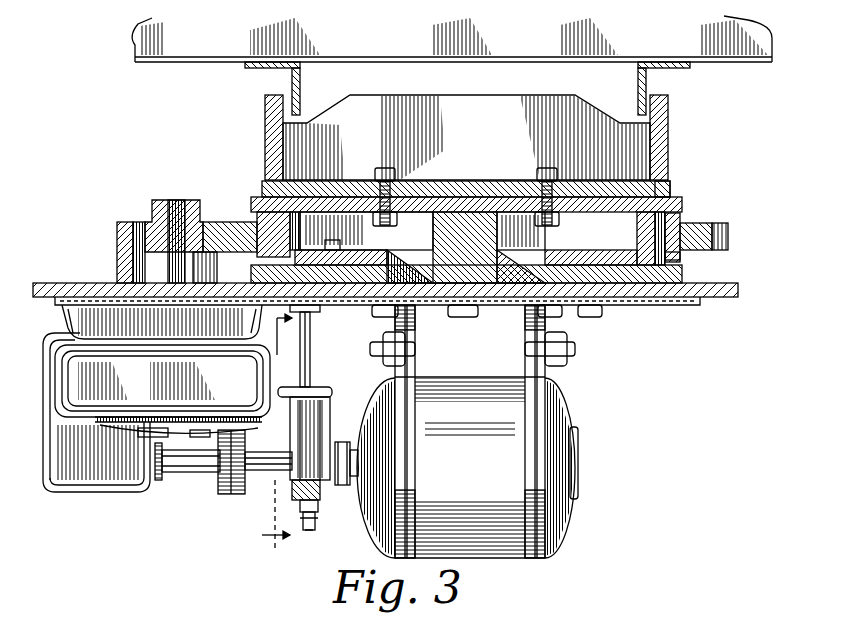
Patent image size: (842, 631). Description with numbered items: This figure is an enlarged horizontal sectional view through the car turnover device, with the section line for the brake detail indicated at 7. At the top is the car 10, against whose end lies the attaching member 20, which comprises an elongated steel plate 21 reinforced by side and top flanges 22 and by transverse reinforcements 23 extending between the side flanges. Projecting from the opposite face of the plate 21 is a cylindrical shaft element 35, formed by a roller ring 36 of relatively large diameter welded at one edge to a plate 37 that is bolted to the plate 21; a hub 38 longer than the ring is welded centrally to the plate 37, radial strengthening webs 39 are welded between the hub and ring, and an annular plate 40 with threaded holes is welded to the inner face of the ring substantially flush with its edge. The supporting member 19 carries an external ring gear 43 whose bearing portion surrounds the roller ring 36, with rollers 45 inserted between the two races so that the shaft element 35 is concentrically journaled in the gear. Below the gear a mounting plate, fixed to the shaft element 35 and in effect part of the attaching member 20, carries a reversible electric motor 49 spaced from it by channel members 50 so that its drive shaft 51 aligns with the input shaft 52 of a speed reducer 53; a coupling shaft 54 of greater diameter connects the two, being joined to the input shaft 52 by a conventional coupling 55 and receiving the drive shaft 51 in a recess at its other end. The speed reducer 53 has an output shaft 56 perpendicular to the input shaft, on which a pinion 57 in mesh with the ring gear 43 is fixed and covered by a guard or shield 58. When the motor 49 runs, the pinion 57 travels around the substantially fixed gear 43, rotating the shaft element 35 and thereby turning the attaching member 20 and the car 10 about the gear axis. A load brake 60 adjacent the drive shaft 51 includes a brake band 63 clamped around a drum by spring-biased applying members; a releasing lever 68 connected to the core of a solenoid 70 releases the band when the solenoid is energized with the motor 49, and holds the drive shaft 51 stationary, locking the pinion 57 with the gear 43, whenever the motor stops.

The car 10 is at (205, 65).
The supporting member 19 is at (728, 253).
The attaching member 20 is at (262, 185).
The elongated steel plate 21 is at (440, 186).
The side and top flanges 22 is at (265, 136).
The transverse reinforcements 23 is at (438, 108).
The shaft element 35 is at (686, 203).
The roller ring 36 is at (673, 256).
The plate 37 is at (670, 186).
The hub 38 is at (440, 298).
The strengthening webs 39 is at (512, 298).
The annular plate 40 is at (636, 285).
The ring gear 43 is at (240, 228).
The rollers 45 is at (662, 225).
The reversible electric motor 49 is at (565, 405).
The channel members 50 is at (520, 348).
The drive shaft 51 is at (330, 446).
The input shaft 52 is at (200, 472).
The speed reducer 53 is at (100, 492).
The coupling shaft 54 is at (262, 482).
The coupling 55 is at (228, 495).
The output shaft 56 is at (178, 203).
The pinion 57 is at (160, 218).
The guard or shield 58 is at (117, 244).
The load brake 60 is at (320, 418).
The brake band 63 is at (320, 490).
The releasing lever 68 is at (320, 518).
The solenoid 70 is at (300, 436).
The section line 7 is at (271, 431).